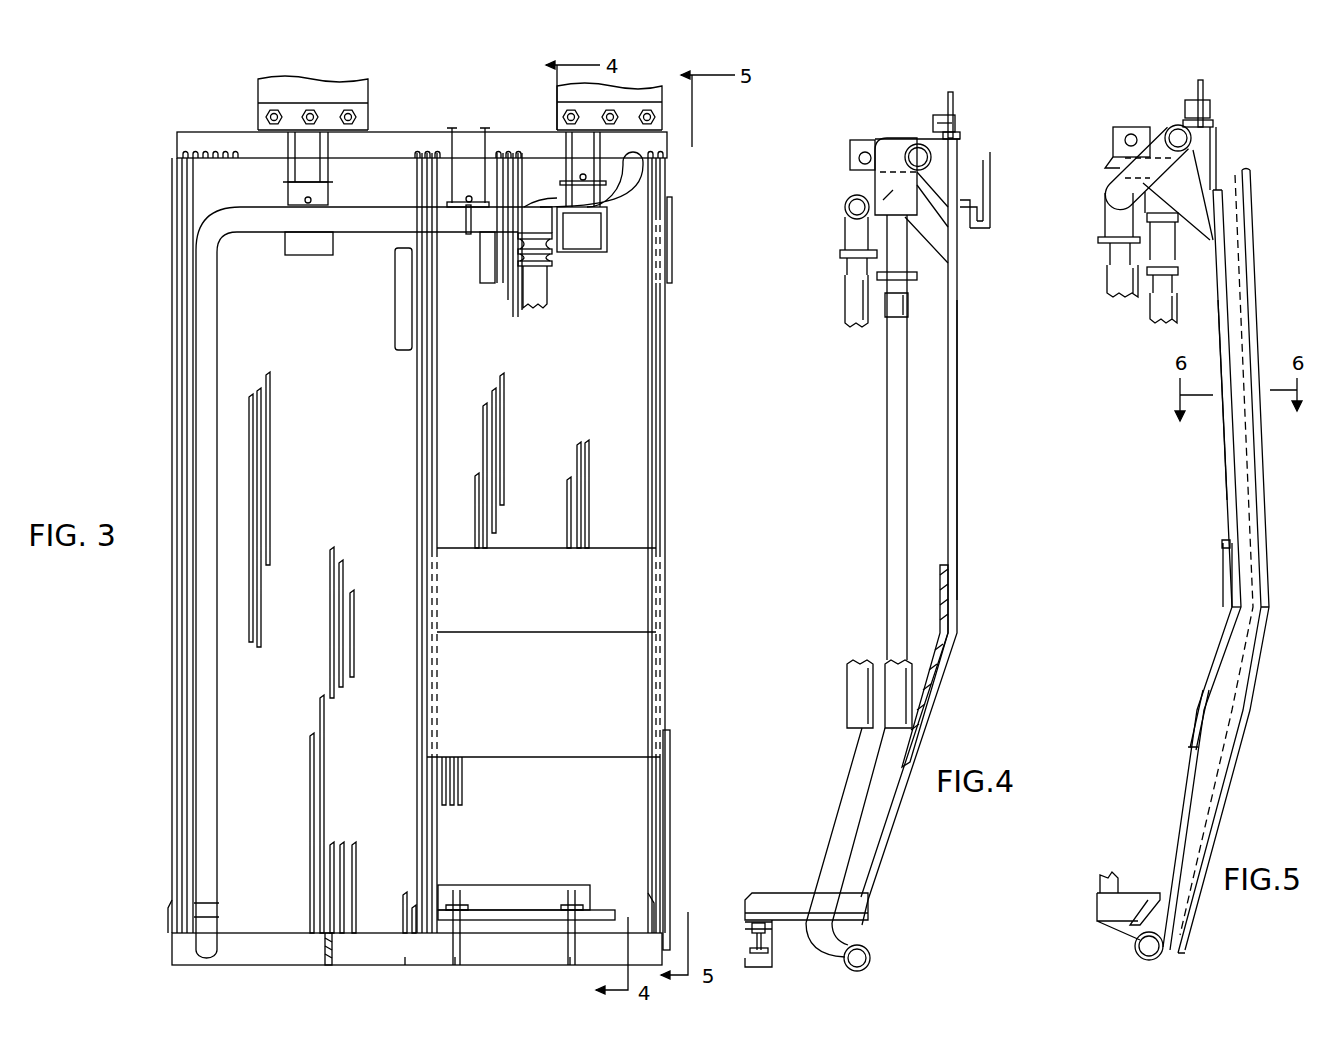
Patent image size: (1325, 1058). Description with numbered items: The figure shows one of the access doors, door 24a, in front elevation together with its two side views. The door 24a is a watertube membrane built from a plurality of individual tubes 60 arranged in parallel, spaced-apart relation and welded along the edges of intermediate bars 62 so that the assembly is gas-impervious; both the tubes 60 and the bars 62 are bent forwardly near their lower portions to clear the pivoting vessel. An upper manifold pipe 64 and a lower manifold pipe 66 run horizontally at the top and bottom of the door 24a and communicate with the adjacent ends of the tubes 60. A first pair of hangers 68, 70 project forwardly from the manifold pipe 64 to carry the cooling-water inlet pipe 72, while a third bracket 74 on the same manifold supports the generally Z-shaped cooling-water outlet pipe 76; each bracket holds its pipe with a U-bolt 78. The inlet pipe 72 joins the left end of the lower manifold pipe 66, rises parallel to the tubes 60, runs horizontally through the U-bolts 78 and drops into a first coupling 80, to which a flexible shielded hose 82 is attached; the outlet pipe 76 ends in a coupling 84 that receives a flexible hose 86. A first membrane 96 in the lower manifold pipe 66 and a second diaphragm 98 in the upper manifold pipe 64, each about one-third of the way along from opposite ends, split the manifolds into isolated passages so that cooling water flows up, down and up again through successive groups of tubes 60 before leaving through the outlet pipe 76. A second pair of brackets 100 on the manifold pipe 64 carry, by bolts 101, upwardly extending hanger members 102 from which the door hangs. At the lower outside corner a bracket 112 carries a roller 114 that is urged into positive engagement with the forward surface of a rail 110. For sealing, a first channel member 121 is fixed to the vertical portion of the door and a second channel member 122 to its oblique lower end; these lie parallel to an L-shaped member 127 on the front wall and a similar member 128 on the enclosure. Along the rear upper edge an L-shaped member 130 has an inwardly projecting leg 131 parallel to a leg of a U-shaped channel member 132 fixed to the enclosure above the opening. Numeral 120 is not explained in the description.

In FIG. 3, the door 24a is at (666, 491).
In FIG. 4, the door 24a is at (957, 543).
In FIG. 5, the door 24a is at (1227, 487).
In FIG. 3, the tubes 60 is at (185, 172).
In FIG. 4, the tubes 60 is at (958, 437).
In FIG. 5, the tubes 60 is at (1165, 880).
In FIG. 3, the intermediate bars 62 is at (193, 218).
In FIG. 3, the manifold pipe 64 is at (423, 138).
In FIG. 4, the manifold pipe 64 is at (913, 143).
In FIG. 5, the manifold pipe 64 is at (1197, 148).
In FIG. 3, the manifold pipe 66 is at (402, 953).
In FIG. 4, the manifold pipe 66 is at (869, 948).
In FIG. 5, the manifold pipe 66 is at (1140, 958).
In FIG. 3, the hanger 68 is at (328, 194).
In FIG. 4, the hanger 68 is at (850, 160).
In FIG. 5, the hanger 68 is at (1147, 124).
In FIG. 3, the hanger 70 is at (465, 147).
In FIG. 4, the hanger 70 is at (887, 136).
In FIG. 3, the water inlet pipe 72 is at (214, 279).
In FIG. 5, the water inlet pipe 72 is at (1173, 246).
In FIG. 3, the third bracket 74 is at (607, 238).
In FIG. 3, the cooling-water outlet pipe 76 is at (640, 175).
In FIG. 4, the cooling-water outlet pipe 76 is at (852, 223).
In FIG. 5, the cooling-water outlet pipe 76 is at (1152, 167).
In FIG. 3, the U-bolt 78 is at (353, 234).
In FIG. 4, the first coupling 80 is at (917, 277).
In FIG. 5, the first coupling 80 is at (1180, 273).
In FIG. 4, the flexible shielded hose 82 is at (910, 307).
In FIG. 5, the flexible shielded hose 82 is at (1160, 313).
In FIG. 3, the coupling 84 is at (553, 268).
In FIG. 4, the coupling 84 is at (842, 257).
In FIG. 5, the coupling 84 is at (1117, 250).
In FIG. 3, the flexible hose 86 is at (534, 312).
In FIG. 4, the flexible hose 86 is at (852, 310).
In FIG. 5, the flexible hose 86 is at (1115, 279).
In FIG. 3, the first membrane 96 is at (325, 950).
In FIG. 3, the second diaphragm 98 is at (505, 150).
In FIG. 3, the brackets 100 is at (256, 113).
In FIG. 4, the brackets 100 is at (960, 134).
In FIG. 5, the brackets 100 is at (1216, 106).
In FIG. 3, the bolts 101 is at (270, 110).
In FIG. 4, the bolts 101 is at (957, 123).
In FIG. 5, the bolts 101 is at (1213, 119).
In FIG. 3, the hanger members 102 is at (355, 92).
In FIG. 4, the hanger members 102 is at (953, 104).
In FIG. 5, the hanger members 102 is at (1207, 91).
In FIG. 4, the rails 110 is at (780, 952).
In FIG. 3, the bracket 112 is at (596, 905).
In FIG. 4, the bracket 112 is at (780, 900).
In FIG. 4, the roller 114 is at (748, 943).
In FIG. 5, the support plate 120 is at (1250, 346).
In FIG. 5, the first channel member 121 is at (1257, 554).
In FIG. 5, the second channel member 122 is at (1233, 734).
In FIG. 5, the L-shaped member 127 is at (1250, 304).
In FIG. 5, the member 128 is at (1253, 676).
In FIG. 4, the L-shaped member 130 is at (971, 204).
In FIG. 4, the leg 131 is at (985, 214).
In FIG. 4, the channel member 132 is at (980, 232).